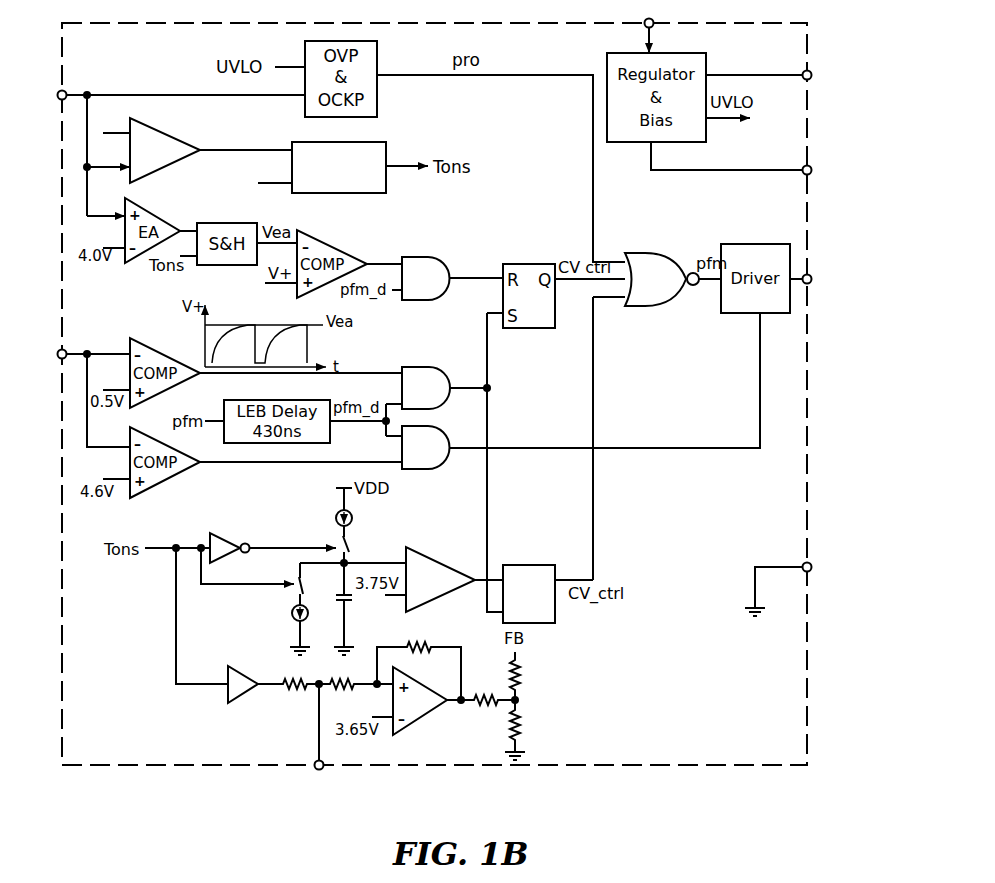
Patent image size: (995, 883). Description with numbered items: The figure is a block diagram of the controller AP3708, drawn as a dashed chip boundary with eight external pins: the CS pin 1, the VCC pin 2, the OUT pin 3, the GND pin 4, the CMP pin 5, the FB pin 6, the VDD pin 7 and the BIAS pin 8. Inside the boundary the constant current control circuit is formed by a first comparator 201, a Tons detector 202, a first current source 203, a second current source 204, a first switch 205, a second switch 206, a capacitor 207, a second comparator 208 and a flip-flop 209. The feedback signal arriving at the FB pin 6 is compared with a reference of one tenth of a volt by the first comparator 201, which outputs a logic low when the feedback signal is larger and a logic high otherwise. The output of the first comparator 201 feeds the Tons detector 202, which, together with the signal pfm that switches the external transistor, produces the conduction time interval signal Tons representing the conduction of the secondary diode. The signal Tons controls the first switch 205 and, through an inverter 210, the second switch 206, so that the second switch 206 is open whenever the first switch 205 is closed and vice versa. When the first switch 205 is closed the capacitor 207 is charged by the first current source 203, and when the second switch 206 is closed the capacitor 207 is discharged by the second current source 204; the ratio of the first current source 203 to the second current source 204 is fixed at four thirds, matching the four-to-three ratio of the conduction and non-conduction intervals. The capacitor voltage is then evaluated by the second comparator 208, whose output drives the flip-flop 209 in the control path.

The CS pin 1 is at (55, 346).
The VCC pin 2 is at (650, 26).
The OUT pin 3 is at (824, 271).
The GND pin 4 is at (801, 578).
The CMP pin 5 is at (319, 764).
The FB pin 6 is at (55, 86).
The VDD pin 7 is at (822, 66).
The BIAS pin 8 is at (823, 162).
The first comparator 201 is at (164, 120).
The Tons detector 202 is at (376, 142).
The first current source 203 is at (363, 519).
The second current source 204 is at (283, 630).
The first switch 205 is at (365, 544).
The second switch 206 is at (280, 581).
The capacitor 207 is at (359, 609).
The second comparator 208 is at (424, 548).
The flip-flop 209 is at (518, 565).
The inverter 210 is at (224, 535).